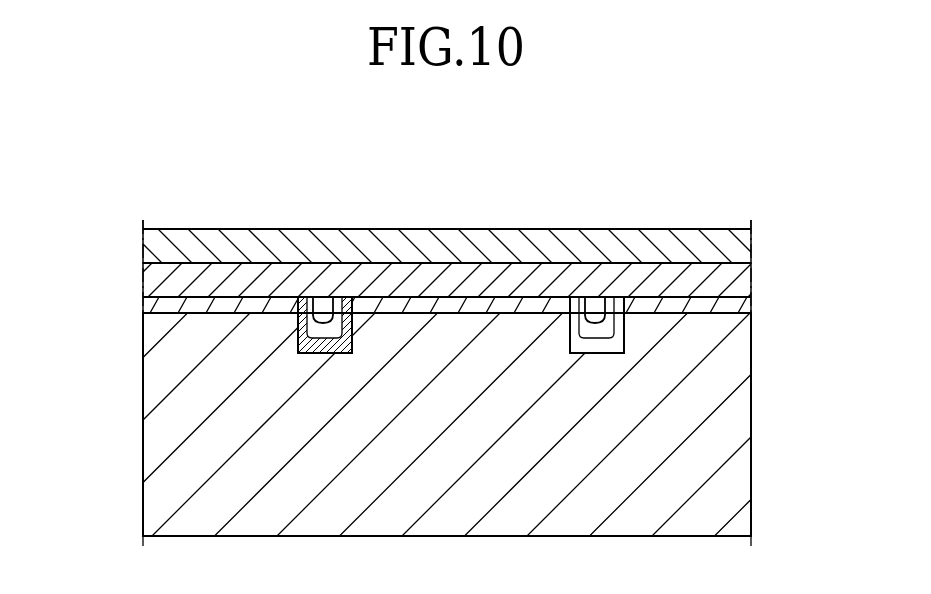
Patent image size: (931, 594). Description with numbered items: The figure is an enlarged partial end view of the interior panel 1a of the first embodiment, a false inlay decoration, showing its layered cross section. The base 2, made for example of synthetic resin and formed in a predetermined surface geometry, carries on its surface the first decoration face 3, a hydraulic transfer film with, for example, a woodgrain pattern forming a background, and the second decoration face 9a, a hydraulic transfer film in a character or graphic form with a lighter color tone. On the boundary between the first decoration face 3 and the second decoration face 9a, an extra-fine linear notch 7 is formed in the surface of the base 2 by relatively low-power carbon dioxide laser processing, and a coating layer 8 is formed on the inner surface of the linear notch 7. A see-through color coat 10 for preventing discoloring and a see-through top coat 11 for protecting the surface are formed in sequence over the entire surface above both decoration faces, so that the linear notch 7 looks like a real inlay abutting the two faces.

The interior panel 1a is at (465, 314).
The base 2 is at (733, 497).
The first decoration face 3 is at (170, 305).
The linear notch 7 is at (298, 327).
The coating layer 8 is at (300, 352).
The second decoration face 9a is at (450, 303).
The color coat 10 is at (343, 283).
The top coat 11 is at (283, 246).